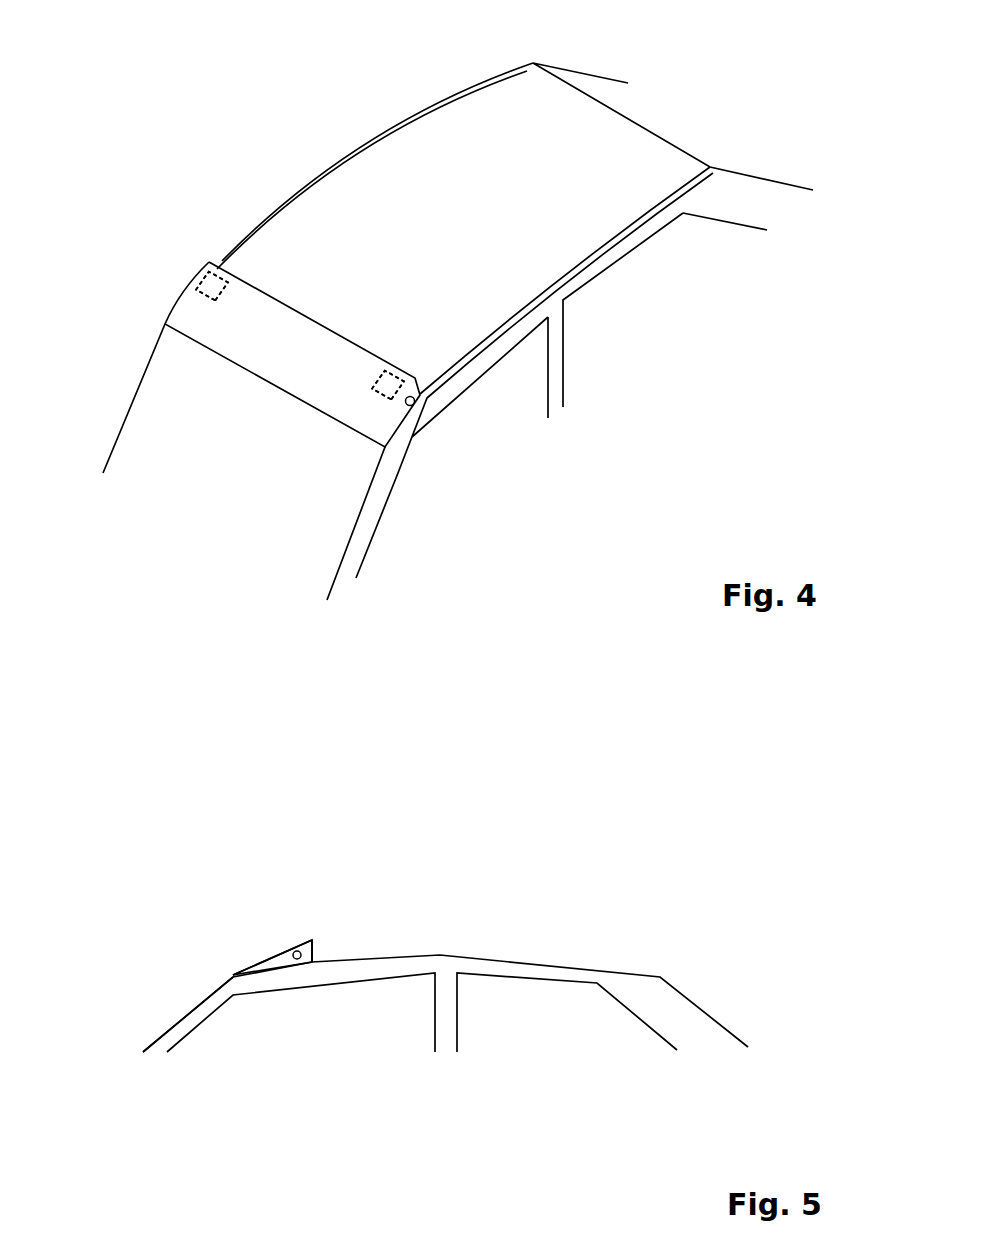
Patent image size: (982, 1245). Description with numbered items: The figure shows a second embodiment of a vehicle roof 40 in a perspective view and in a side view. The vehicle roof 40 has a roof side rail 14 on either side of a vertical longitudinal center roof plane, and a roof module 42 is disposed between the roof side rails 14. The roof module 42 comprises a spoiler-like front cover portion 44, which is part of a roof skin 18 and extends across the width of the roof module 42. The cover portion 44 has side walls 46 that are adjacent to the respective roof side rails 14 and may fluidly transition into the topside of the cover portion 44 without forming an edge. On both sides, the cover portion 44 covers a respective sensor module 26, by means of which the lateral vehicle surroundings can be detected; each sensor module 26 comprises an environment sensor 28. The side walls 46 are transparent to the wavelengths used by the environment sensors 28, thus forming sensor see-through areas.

In FIG. 4, the roof side rail 14 is at (350, 168).
In FIG. 5, the roof side rail 14 is at (542, 970).
In FIG. 4, the roof skin 18 is at (474, 237).
In FIG. 5, the roof skin 18 is at (245, 967).
In FIG. 4, the sensor module 26 is at (212, 286).
In FIG. 5, the sensor module 26 is at (312, 940).
In FIG. 4, the environment sensor 28 is at (300, 336).
In FIG. 4, the vehicle roof 40 is at (453, 94).
In FIG. 4, the roof module 42 is at (623, 150).
In FIG. 5, the roof module 42 is at (288, 947).
In FIG. 4, the cover portion 44 is at (215, 328).
In FIG. 5, the cover portion 44 is at (268, 952).
In FIG. 4, the side wall 46 is at (403, 412).
In FIG. 5, the side wall 46 is at (267, 965).